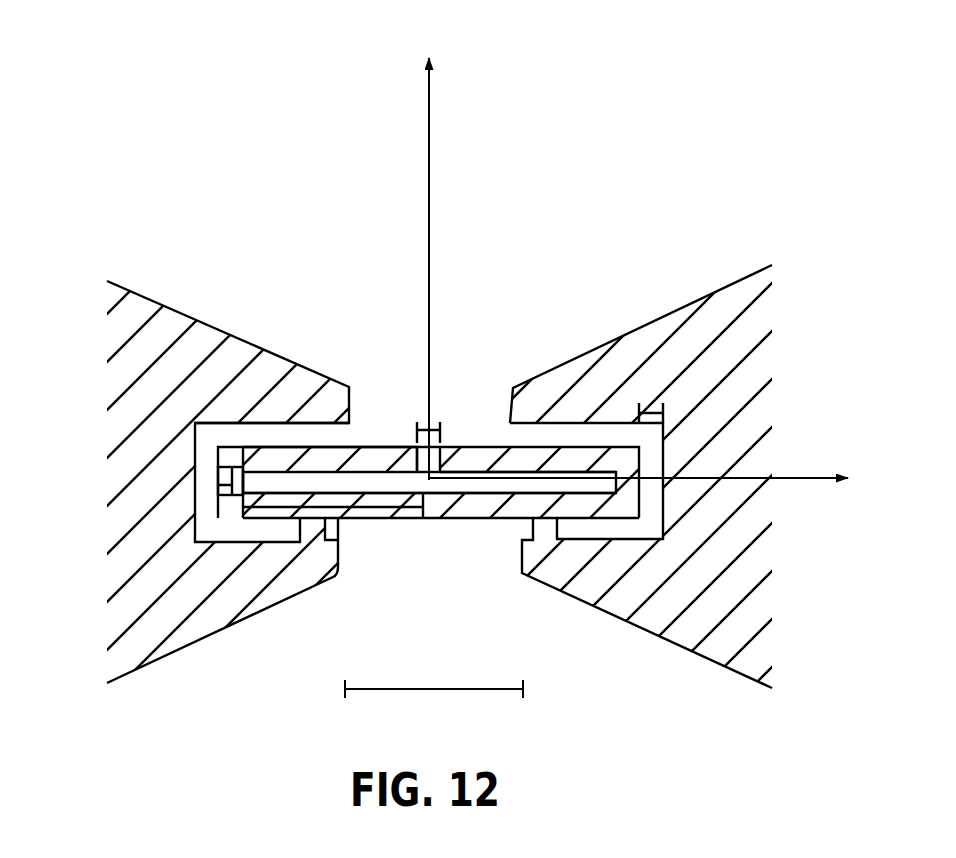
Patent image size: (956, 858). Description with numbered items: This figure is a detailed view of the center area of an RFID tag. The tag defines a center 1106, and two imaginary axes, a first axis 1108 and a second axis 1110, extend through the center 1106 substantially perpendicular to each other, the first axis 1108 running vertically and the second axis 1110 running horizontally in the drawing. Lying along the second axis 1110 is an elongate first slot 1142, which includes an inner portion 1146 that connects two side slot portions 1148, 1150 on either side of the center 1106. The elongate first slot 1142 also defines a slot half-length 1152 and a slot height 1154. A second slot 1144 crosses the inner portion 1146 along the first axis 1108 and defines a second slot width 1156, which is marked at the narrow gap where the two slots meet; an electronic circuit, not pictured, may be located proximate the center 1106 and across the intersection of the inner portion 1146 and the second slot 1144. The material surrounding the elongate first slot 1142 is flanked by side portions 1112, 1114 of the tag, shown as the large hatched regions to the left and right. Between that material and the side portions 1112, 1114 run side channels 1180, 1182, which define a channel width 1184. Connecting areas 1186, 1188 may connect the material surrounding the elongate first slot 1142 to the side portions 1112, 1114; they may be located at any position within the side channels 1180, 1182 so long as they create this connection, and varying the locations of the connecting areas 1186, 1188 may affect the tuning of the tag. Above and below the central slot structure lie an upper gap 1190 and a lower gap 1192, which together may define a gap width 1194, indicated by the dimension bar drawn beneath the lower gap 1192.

The center 1106 is at (431, 481).
The first axis 1108 is at (432, 112).
The second axis 1110 is at (647, 449).
The side portion 1112 is at (146, 273).
The side portion 1114 is at (705, 264).
The elongate first slot 1142 is at (342, 468).
The second slot 1144 is at (441, 455).
The inner portion 1146 is at (422, 480).
The side slot portion 1148 is at (277, 468).
The side slot portion 1150 is at (572, 495).
The slot half-length 1152 is at (320, 522).
The slot height 1154 is at (231, 484).
The second slot width 1156 is at (428, 433).
The side channel 1180 is at (226, 531).
The side channel 1182 is at (650, 530).
The channel width 1184 is at (655, 412).
The connecting area 1186 is at (320, 533).
The connecting area 1188 is at (540, 534).
The upper gap 1190 is at (457, 396).
The lower gap 1192 is at (425, 543).
The gap width 1194 is at (440, 700).